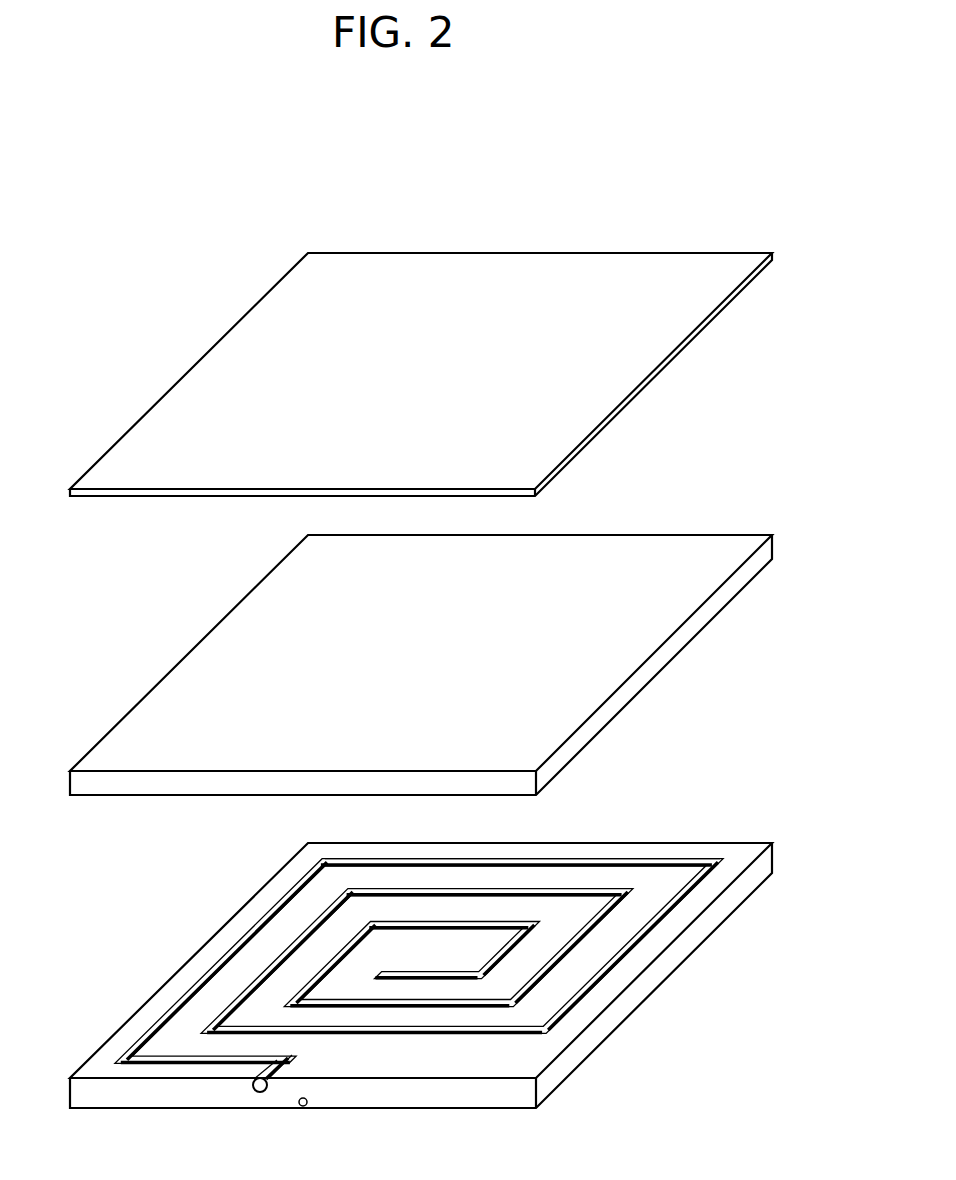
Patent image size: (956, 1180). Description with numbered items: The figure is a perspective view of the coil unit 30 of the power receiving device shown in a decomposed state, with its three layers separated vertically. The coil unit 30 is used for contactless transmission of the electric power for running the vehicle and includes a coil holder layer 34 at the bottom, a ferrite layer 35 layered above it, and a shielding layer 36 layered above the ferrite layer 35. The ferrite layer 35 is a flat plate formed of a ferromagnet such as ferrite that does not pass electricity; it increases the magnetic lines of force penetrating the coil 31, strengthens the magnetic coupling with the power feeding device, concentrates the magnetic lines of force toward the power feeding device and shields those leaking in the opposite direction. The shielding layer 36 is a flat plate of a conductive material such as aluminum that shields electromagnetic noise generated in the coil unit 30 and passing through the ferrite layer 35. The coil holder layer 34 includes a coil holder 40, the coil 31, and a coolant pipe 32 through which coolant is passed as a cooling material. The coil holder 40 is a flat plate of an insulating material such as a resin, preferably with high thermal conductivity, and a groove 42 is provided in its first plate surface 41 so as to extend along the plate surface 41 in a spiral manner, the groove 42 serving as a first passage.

The coil unit 30 is at (176, 196).
The coil 31 is at (703, 863).
The coolant pipe 32 is at (305, 1107).
The coil holder layer 34 is at (760, 825).
The ferrite layer 35 is at (703, 540).
The shielding layer 36 is at (657, 257).
The coil holder 40 is at (683, 942).
The first plate surface 41 is at (582, 848).
The groove 42 is at (632, 860).